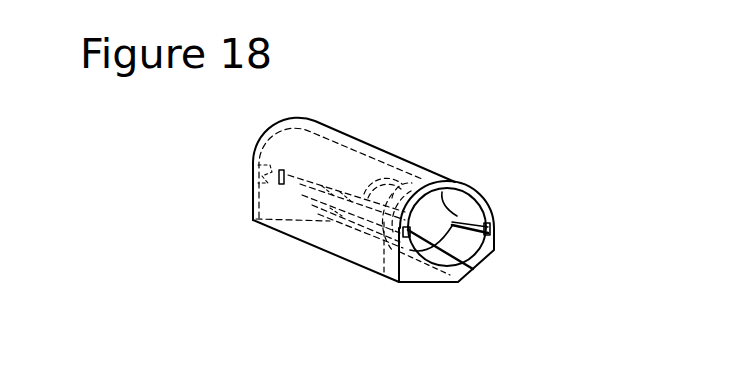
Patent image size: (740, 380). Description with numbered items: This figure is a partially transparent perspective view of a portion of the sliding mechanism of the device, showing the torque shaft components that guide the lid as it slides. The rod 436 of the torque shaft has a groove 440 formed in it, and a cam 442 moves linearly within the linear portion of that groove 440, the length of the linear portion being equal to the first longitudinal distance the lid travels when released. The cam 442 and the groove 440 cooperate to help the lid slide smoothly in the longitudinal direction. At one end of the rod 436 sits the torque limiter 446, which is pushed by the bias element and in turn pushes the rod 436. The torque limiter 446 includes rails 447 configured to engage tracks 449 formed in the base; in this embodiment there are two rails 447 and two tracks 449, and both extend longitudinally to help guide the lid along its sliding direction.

The rod 436 is at (352, 165).
The groove 440 is at (300, 189).
The cam 442 is at (276, 178).
The torque limiter 446 is at (413, 187).
The rail 447 is at (455, 214).
The track 449 is at (473, 265).